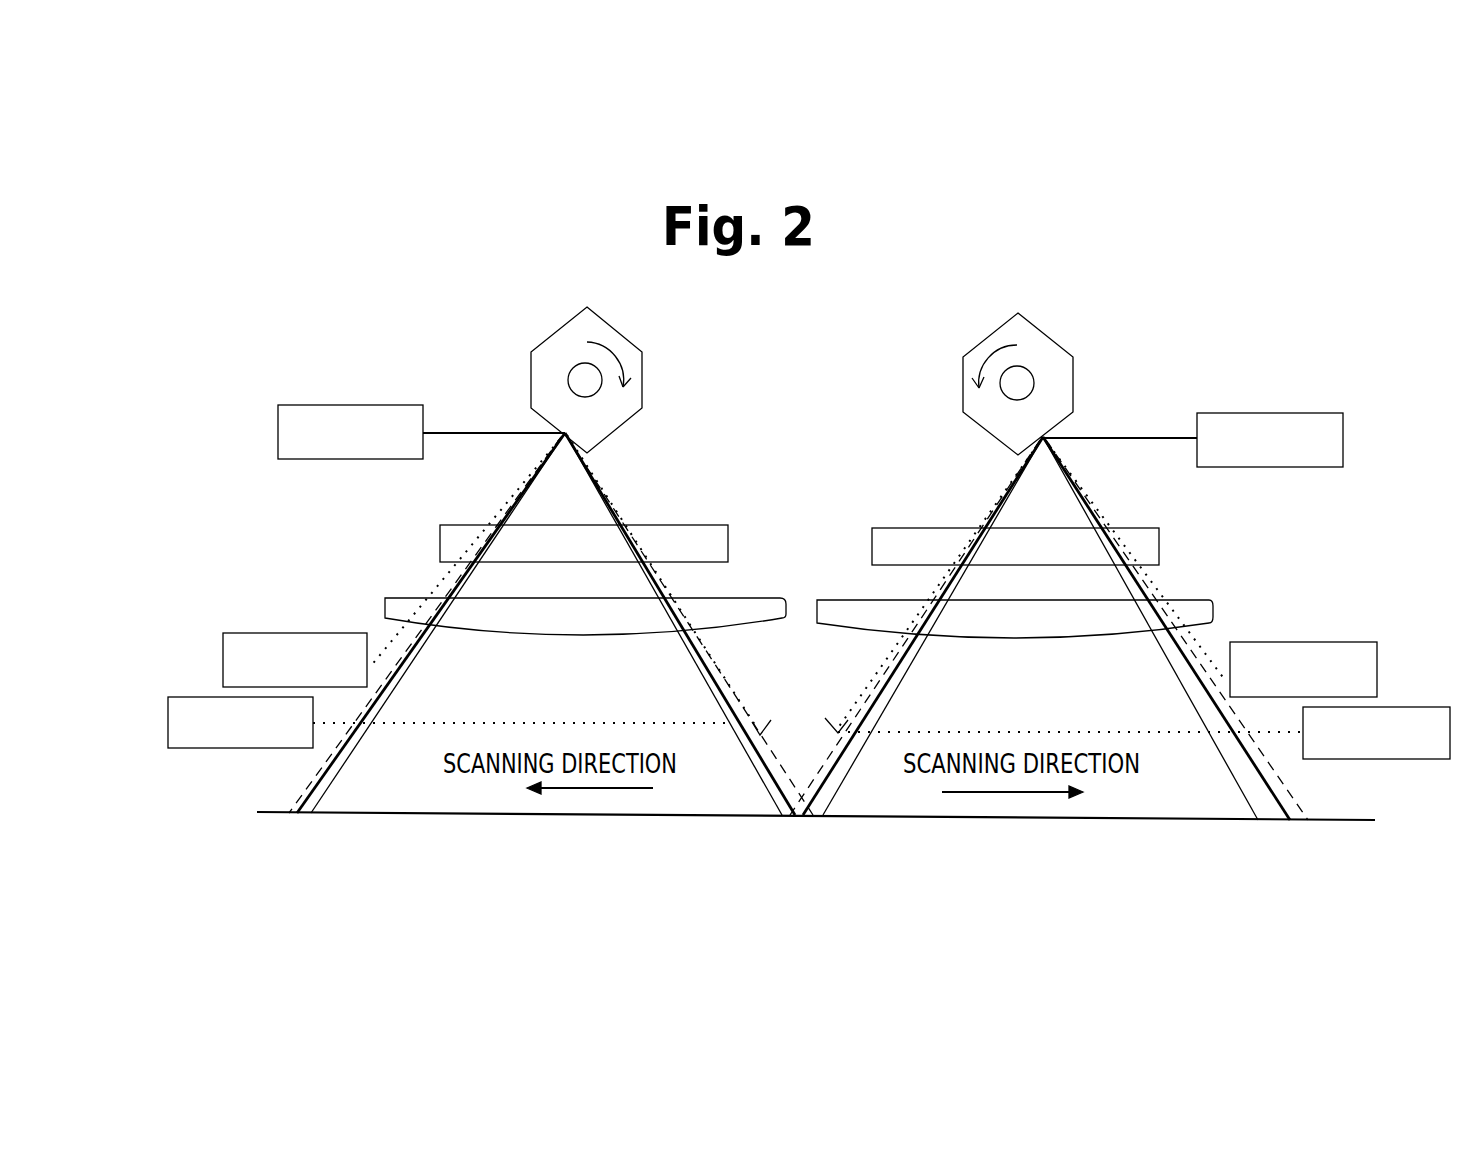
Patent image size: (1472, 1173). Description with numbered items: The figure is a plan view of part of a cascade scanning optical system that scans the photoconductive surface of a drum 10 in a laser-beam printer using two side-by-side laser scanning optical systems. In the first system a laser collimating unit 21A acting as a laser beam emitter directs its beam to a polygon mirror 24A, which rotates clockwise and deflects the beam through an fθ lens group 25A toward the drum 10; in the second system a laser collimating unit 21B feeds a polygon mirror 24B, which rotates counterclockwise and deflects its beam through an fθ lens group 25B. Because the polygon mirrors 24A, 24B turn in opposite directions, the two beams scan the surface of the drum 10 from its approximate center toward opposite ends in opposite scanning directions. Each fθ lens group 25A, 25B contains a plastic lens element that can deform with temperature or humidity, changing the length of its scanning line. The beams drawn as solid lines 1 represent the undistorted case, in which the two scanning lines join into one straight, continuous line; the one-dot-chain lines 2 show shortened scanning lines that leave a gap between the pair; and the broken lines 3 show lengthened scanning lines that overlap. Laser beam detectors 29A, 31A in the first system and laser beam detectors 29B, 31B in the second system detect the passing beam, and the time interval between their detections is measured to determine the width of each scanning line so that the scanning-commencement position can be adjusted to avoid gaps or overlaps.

The solid lines 1 is at (297, 813).
The one-dot-chain lines 2 is at (347, 768).
The broken lines 3 is at (318, 770).
The drum 10 is at (416, 813).
The laser collimating unit 21A is at (320, 405).
The laser collimating unit 21B is at (1310, 393).
The polygon mirror 24A is at (556, 332).
The polygon mirror 24B is at (1060, 346).
The fθ lens group 25A is at (434, 512).
The fθ lens group 25B is at (1188, 521).
The laser beam detector 29A is at (205, 697).
The laser beam detector 29B is at (1402, 707).
The laser beam detector 31A is at (275, 633).
The laser beam detector 31B is at (1338, 642).